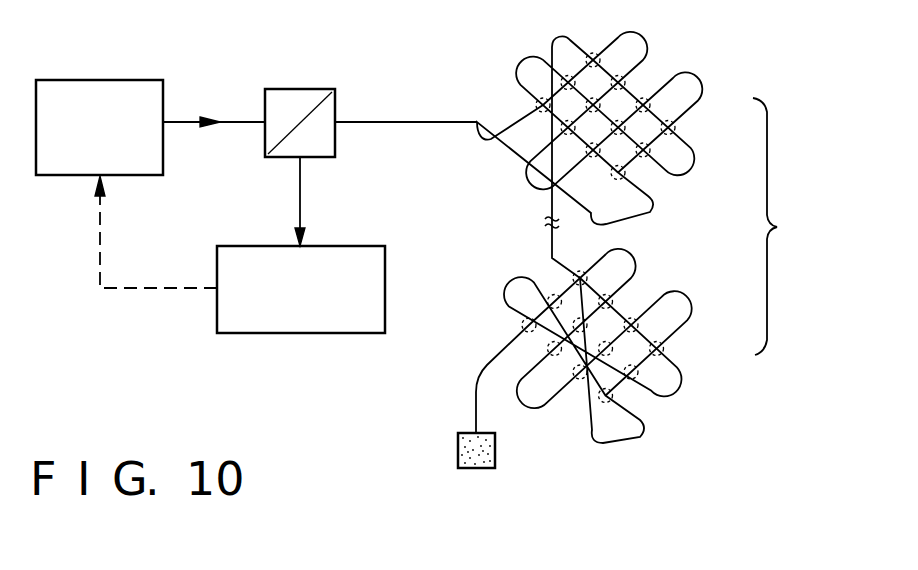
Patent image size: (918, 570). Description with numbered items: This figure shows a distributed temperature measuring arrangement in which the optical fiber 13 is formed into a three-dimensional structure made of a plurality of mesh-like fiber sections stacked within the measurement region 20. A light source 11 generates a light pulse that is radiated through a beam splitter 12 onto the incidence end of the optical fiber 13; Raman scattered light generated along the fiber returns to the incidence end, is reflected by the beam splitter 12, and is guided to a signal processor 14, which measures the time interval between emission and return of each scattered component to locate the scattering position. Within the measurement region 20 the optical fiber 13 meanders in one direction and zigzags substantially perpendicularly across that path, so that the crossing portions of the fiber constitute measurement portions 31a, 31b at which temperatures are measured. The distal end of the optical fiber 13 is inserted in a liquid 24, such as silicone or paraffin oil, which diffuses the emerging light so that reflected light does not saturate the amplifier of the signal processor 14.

The light source 11 is at (103, 80).
The beam splitter 12 is at (300, 89).
The optical fiber 13 is at (397, 122).
The signal processor 14 is at (385, 285).
The measurement region 20 is at (634, 225).
The liquid 24 is at (495, 452).
The measurement portion 31a is at (539, 104).
The measurement portion 31b is at (572, 78).